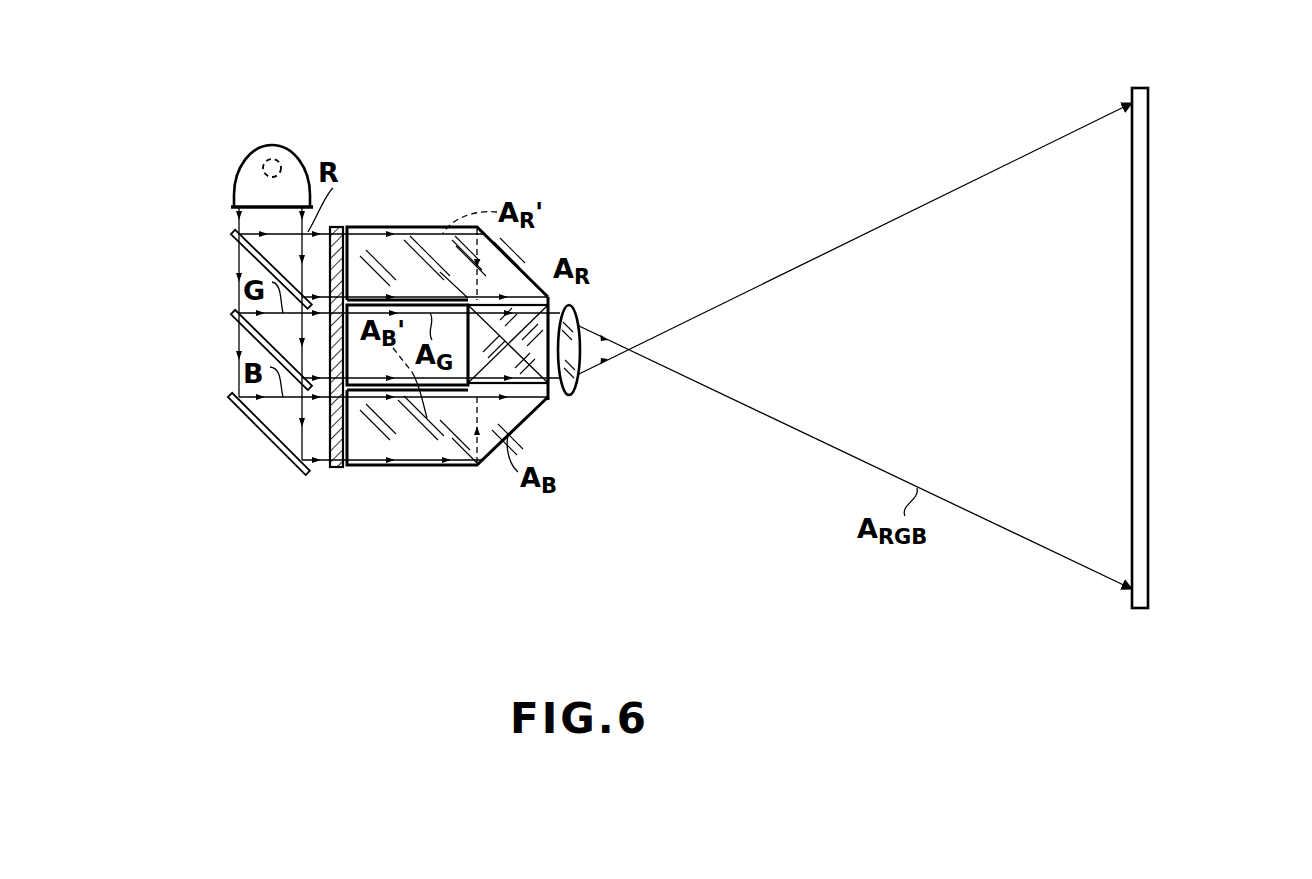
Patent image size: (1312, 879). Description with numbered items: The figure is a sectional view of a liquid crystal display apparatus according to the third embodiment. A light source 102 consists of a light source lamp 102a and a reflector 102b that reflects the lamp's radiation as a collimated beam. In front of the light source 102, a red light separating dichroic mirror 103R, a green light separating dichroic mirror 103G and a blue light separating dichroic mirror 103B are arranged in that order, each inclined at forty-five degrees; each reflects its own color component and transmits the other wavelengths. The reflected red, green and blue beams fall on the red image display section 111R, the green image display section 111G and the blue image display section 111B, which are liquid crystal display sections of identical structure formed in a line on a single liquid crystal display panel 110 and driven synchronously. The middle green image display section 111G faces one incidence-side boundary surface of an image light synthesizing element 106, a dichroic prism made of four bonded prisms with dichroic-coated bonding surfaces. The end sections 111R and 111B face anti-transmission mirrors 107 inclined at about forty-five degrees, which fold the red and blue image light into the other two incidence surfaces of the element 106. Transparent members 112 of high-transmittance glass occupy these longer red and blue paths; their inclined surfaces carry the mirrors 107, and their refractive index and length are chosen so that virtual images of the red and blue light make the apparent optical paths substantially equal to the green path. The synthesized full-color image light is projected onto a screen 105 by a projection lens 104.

The light source 102 is at (283, 140).
The light source lamp 102a is at (268, 158).
The reflector 102b is at (241, 183).
The red light separating dichroic mirror 103R is at (247, 258).
The green light separating dichroic mirror 103G is at (250, 340).
The blue light separating dichroic mirror 103B is at (253, 423).
The projection lens 104 is at (578, 370).
The screen 105 is at (1149, 392).
The image light synthesizing element 106 is at (548, 296).
The anti-transmission mirror 107 is at (518, 270).
The liquid crystal display panel 110 is at (338, 228).
The red image display section 111R is at (372, 228).
The green image display section 111G is at (372, 392).
The blue image display section 111B is at (340, 425).
The transparent member 112 is at (416, 240).